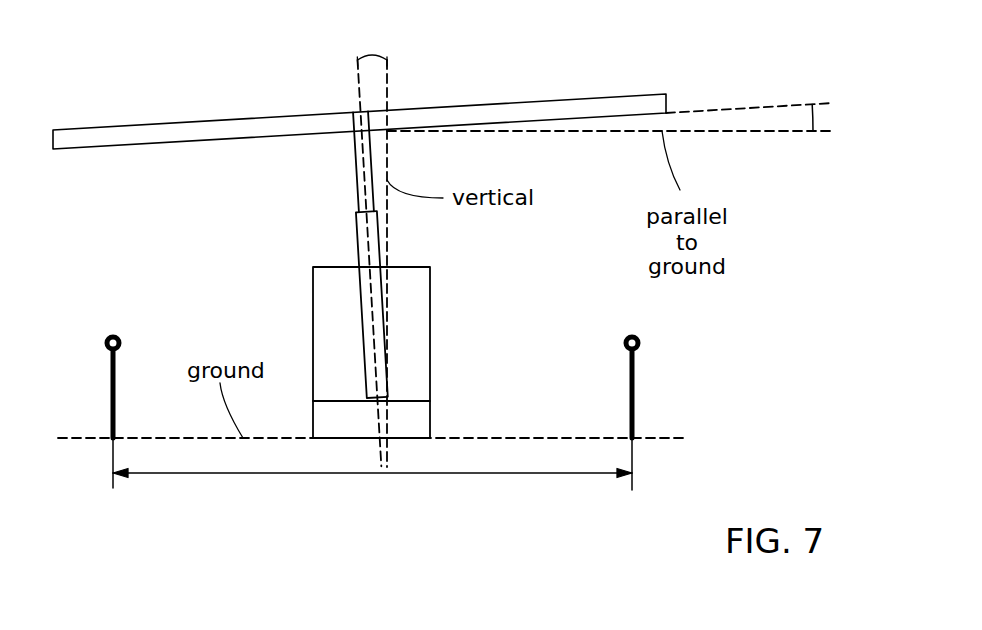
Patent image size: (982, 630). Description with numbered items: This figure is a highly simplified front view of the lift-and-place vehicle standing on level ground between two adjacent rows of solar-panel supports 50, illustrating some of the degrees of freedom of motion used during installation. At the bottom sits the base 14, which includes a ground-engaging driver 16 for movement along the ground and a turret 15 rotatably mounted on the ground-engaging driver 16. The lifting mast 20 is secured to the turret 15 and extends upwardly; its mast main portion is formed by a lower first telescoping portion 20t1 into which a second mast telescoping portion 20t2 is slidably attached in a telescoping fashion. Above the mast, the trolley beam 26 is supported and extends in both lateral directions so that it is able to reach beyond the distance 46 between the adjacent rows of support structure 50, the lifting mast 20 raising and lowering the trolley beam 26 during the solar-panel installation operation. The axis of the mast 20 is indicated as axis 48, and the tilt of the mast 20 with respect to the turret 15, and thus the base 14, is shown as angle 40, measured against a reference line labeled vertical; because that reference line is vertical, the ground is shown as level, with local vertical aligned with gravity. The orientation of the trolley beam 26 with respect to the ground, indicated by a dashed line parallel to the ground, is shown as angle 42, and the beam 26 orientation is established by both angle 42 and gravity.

The base 14 is at (443, 328).
The turret 15 is at (412, 290).
The ground-engaging driver 16 is at (412, 418).
The lifting mast 20 is at (305, 261).
The lower first telescoping portion 20t1 is at (372, 304).
The second mast telescoping portion 20t2 is at (363, 161).
The trolley beam 26 is at (493, 113).
The angle 40 is at (371, 57).
The angle 42 is at (812, 110).
The distance 46 is at (182, 473).
The axis 48 is at (363, 257).
The solar-panel support structure 50 is at (110, 388).